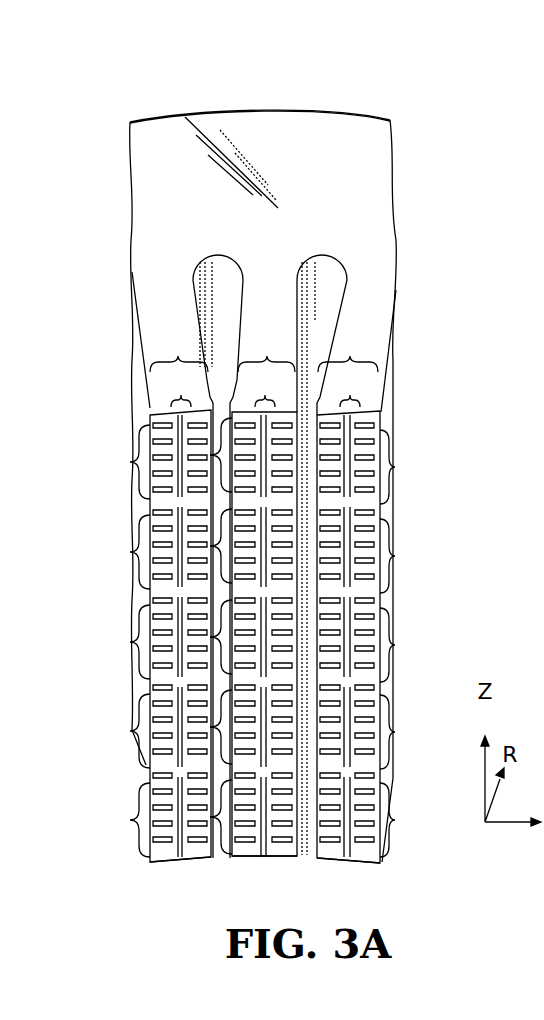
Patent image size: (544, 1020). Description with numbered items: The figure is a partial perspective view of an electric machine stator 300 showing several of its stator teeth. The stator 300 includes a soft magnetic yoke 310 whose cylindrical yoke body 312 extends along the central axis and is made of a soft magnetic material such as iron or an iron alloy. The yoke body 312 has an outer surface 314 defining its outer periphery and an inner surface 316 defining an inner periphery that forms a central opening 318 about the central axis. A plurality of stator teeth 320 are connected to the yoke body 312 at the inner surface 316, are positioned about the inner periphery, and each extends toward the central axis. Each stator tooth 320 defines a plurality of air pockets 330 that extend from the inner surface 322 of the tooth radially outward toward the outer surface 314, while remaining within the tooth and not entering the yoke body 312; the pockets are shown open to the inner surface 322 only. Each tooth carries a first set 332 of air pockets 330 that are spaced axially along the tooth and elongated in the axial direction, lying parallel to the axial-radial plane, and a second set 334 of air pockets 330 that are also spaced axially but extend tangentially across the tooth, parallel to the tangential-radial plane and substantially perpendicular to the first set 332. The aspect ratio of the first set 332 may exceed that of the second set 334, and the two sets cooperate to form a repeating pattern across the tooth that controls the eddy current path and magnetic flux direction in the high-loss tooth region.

The electric machine stator 300 is at (136, 94).
The soft magnetic yoke 310 is at (130, 227).
The cylindrical yoke body 312 is at (181, 176).
The outer surface 314 is at (313, 110).
The inner surface 316 is at (226, 306).
The central opening 318 is at (222, 872).
The stator tooth 320 is at (148, 878).
The inner surface of the stator tooth 322 is at (172, 872).
The air pockets 330 is at (405, 332).
The first set of air pockets 332 is at (405, 392).
The second set of air pockets 334 is at (130, 462).